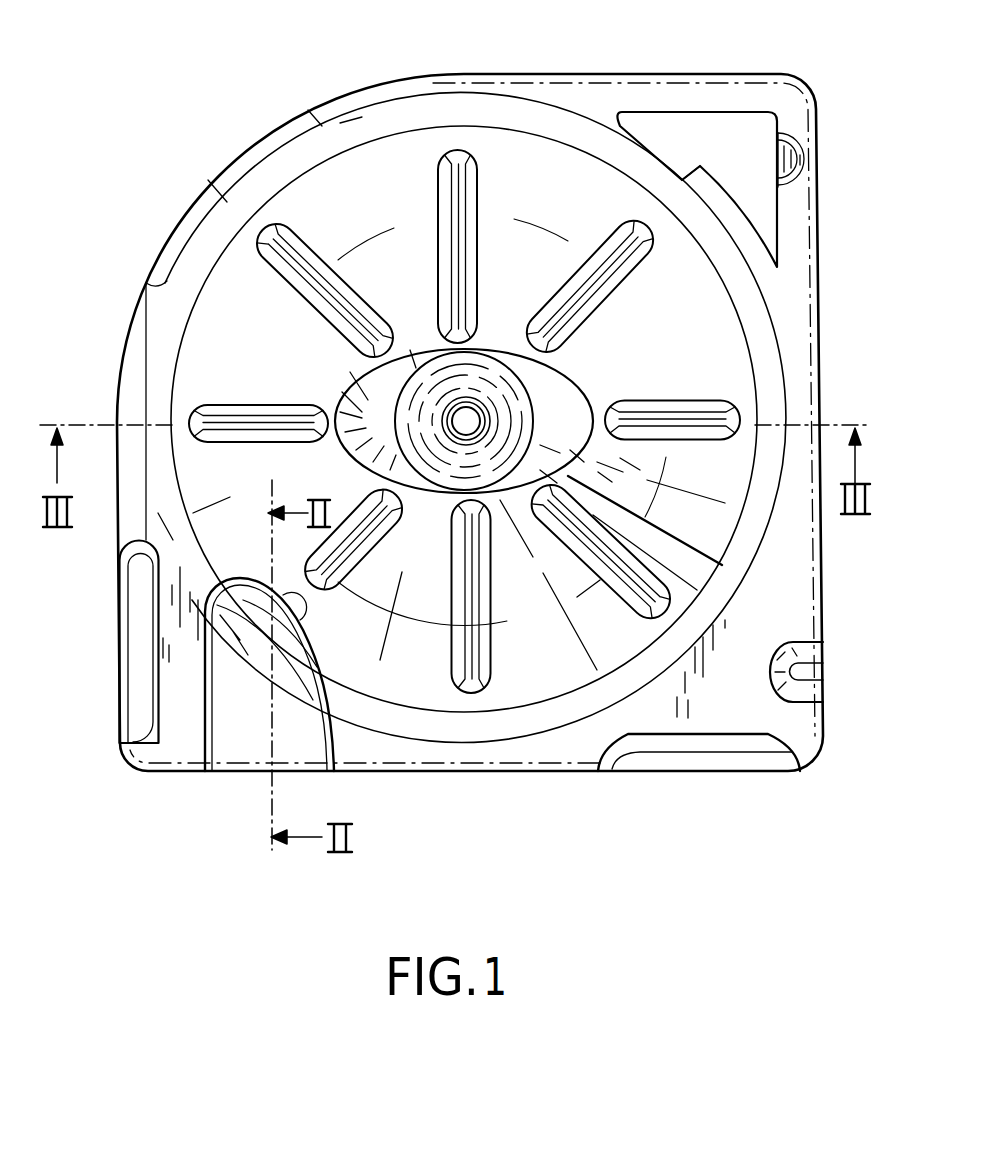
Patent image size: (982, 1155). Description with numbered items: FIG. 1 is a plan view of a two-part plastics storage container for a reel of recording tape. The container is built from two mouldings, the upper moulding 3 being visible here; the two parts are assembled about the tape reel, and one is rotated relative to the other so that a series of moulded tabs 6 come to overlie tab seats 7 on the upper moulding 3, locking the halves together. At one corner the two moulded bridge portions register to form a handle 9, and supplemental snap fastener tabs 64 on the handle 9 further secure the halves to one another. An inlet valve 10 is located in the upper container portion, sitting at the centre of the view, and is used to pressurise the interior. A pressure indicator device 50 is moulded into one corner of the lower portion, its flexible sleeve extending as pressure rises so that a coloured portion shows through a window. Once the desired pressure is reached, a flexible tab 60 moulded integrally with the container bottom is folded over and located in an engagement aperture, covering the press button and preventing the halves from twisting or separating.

The upper moulding 3 is at (543, 672).
The moulded tabs 6 is at (130, 622).
The tab seats 7 is at (118, 543).
The handle 9 is at (641, 92).
The inlet valve 10 is at (462, 410).
The pressure indicator device 50 is at (812, 670).
The flexible tab 60 is at (264, 712).
The supplemental snap fastener tabs 64 is at (790, 186).